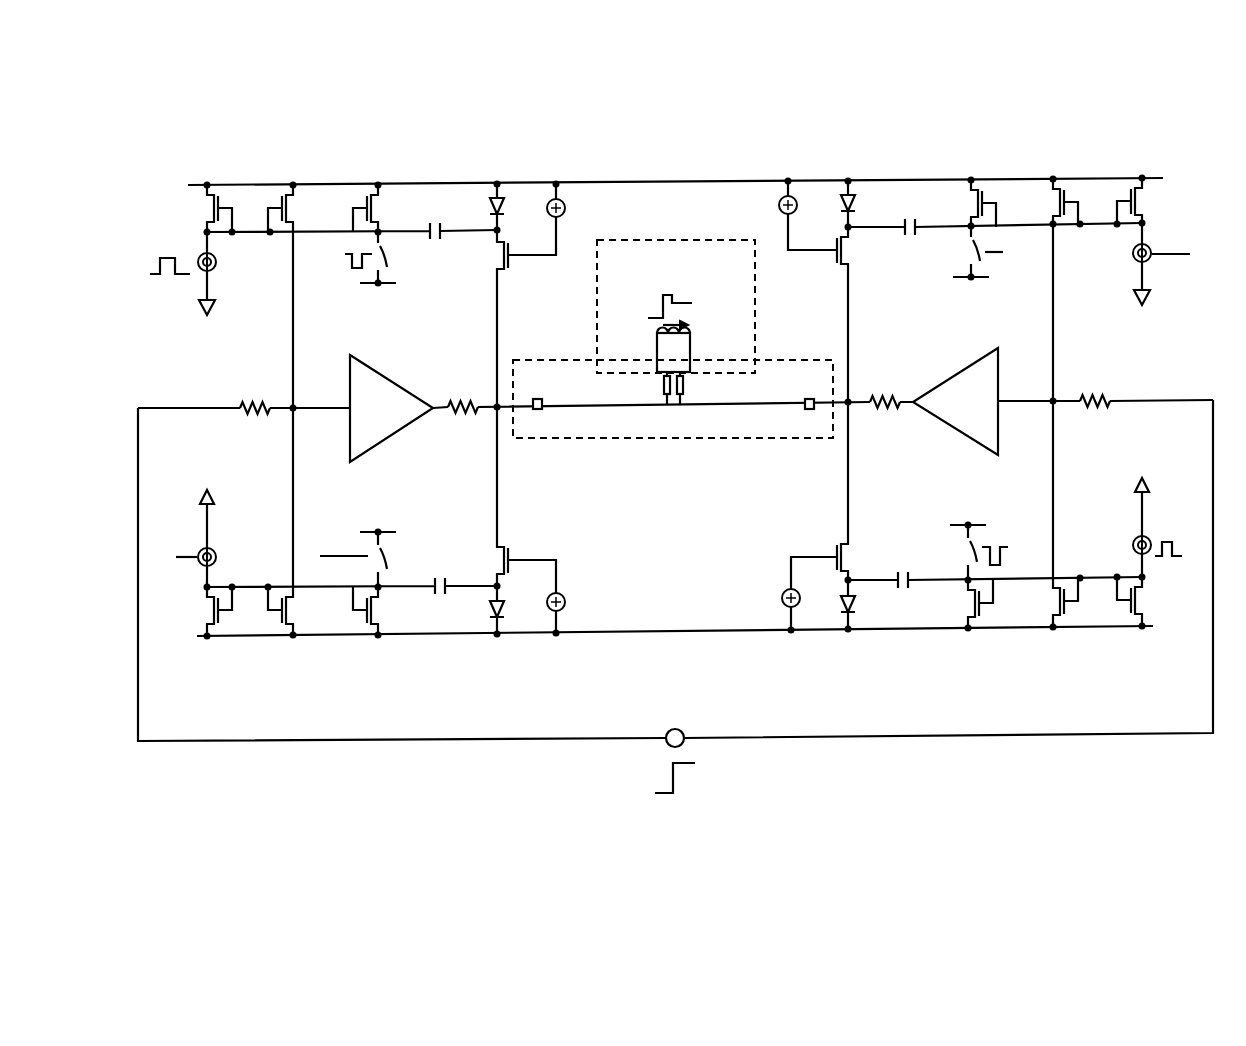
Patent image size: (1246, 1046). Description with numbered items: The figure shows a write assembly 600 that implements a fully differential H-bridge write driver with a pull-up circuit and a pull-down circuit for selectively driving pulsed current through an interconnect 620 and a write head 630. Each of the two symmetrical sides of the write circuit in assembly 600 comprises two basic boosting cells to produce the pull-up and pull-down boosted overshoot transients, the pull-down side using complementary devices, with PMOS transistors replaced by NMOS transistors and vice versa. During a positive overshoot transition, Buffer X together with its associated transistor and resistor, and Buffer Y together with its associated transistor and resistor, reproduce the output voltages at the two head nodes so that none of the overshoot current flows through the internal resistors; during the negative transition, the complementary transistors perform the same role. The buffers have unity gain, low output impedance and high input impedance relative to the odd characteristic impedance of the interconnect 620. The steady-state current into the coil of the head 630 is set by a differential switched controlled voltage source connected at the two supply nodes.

The write assembly 600 is at (222, 156).
The interconnect 620 is at (550, 358).
The write head 630 is at (699, 240).